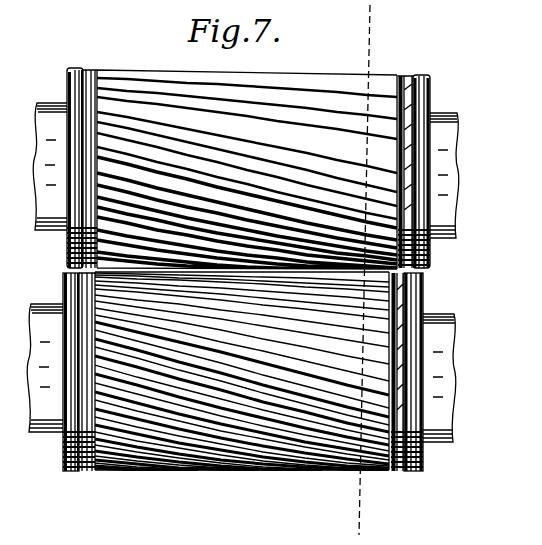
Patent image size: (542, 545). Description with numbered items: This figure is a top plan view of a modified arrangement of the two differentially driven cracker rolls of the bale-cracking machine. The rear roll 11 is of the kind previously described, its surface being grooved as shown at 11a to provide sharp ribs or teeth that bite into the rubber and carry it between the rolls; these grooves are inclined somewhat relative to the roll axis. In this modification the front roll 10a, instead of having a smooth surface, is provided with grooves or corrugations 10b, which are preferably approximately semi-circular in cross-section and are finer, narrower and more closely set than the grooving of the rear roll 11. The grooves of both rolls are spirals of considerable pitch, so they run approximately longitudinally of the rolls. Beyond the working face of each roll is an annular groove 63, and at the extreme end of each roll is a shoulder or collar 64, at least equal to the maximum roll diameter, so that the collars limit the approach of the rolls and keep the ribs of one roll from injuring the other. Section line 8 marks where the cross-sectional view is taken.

The rear cracker roll 11 is at (264, 154).
The grooves of rear roll 11a is at (294, 77).
The front roll 10a is at (241, 390).
The grooves or corrugations 10b is at (160, 436).
The annular groove 63 is at (406, 115).
The collar 64 is at (431, 82).
The section line 8— 8 is at (370, 33).